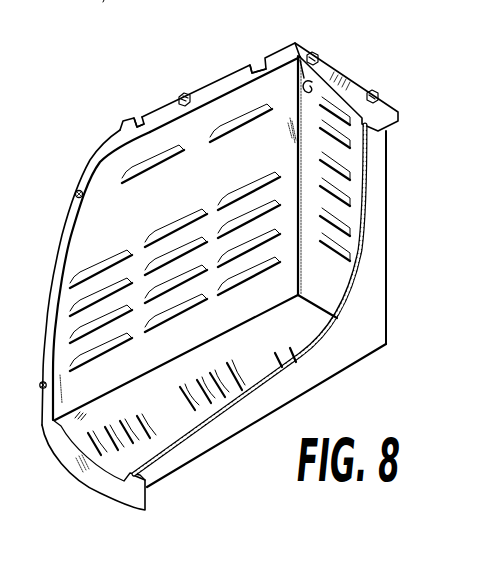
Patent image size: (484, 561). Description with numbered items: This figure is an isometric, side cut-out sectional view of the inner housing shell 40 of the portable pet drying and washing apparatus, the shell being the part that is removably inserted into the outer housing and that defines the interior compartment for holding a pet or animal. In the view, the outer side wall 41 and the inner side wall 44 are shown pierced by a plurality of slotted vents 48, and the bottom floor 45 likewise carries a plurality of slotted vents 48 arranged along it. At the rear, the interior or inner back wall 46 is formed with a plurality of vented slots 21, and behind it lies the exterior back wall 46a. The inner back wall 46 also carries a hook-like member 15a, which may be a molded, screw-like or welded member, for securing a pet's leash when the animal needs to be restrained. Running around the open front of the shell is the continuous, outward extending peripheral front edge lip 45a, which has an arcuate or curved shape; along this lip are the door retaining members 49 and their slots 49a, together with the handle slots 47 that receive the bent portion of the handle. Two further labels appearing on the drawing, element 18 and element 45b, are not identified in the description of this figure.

The hook-like member 15a is at (302, 50).
The frame member 18 is at (103, 2).
The vented slots 21 is at (345, 112).
The inner housing shell 40 is at (400, 186).
The outer side wall 41 is at (337, 361).
The inner side wall 44 is at (191, 191).
The bottom floor 45 is at (75, 420).
The peripheral front edge lip 45a is at (199, 95).
The fastener bolt 45b is at (185, 94).
The interior back wall 46 is at (339, 282).
The exterior back wall 46a is at (388, 248).
The handle slots 47 is at (126, 126).
The slotted vents 48 is at (138, 173).
The door retaining members 49 is at (74, 197).
The slots 49a is at (78, 190).